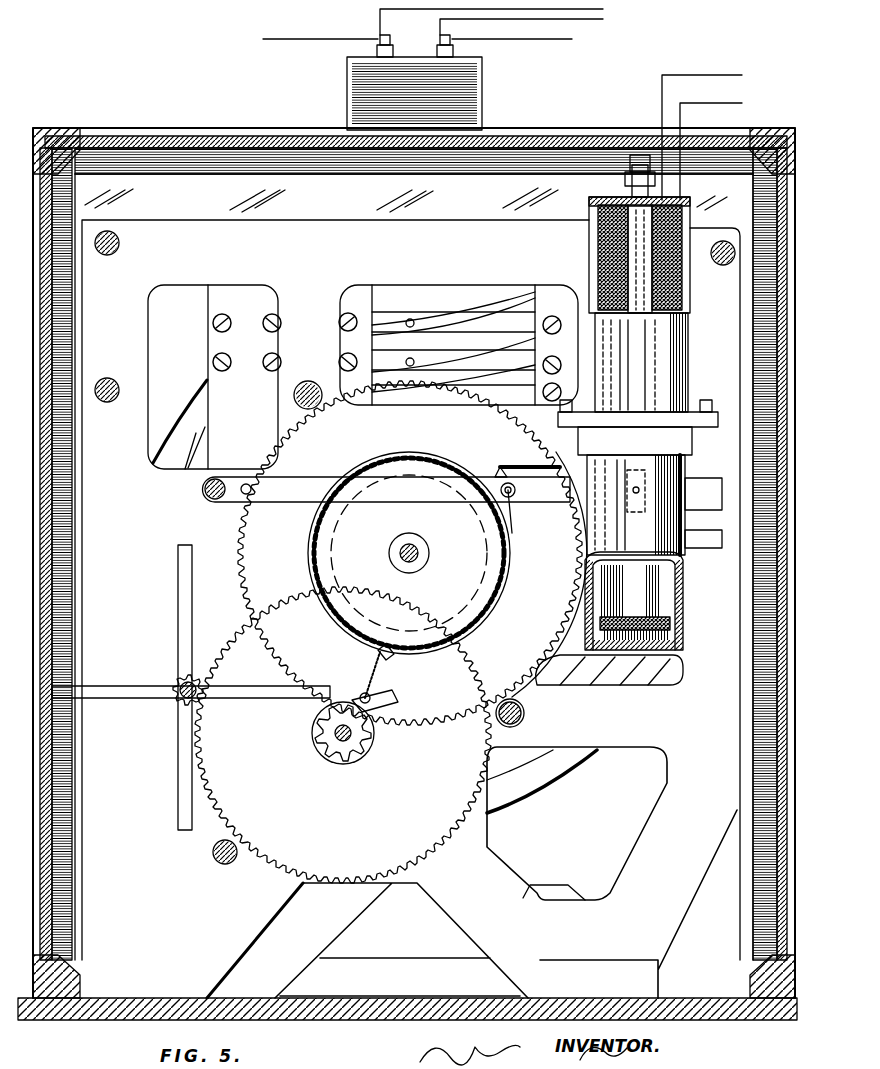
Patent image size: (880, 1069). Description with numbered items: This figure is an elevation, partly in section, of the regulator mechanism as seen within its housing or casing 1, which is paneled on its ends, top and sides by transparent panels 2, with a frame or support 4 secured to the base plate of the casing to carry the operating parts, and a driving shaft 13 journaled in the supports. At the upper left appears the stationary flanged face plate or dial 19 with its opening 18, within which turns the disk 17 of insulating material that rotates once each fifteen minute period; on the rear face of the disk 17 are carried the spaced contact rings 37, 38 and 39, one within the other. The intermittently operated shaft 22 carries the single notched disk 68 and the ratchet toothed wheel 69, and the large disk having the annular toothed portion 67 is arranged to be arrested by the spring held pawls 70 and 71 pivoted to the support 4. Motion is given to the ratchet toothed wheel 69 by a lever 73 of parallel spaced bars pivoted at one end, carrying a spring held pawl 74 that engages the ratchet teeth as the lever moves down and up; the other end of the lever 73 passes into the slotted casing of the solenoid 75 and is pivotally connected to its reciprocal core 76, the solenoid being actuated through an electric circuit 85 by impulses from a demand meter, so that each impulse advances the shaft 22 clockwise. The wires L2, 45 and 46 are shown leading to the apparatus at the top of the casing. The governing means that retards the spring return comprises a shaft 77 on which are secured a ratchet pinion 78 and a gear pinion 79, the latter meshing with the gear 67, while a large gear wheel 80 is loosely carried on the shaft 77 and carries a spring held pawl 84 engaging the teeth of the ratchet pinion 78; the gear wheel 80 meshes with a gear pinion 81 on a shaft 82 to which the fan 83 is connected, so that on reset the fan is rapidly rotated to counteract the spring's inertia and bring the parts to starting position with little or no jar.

The housing or casing 1 is at (378, 1018).
The transparent panels 2 is at (188, 140).
The frame or support 4 is at (415, 890).
The driving shaft 13 is at (220, 864).
The disk 17 is at (186, 400).
The opening 18 is at (172, 430).
The flanged face plate or dial 19 is at (214, 377).
The intermittently operated shaft 22 is at (400, 553).
The contact ring 37 is at (418, 376).
The contact ring 38 is at (461, 372).
The contact ring 39 is at (500, 330).
The lead wire 45 is at (588, 12).
The lead wire 46 is at (531, 20).
The annular toothed portion 67 is at (497, 408).
The single notched disk 68 is at (468, 605).
The ratchet toothed wheel 69 is at (312, 540).
The spring held pawl 70 is at (496, 718).
The spring held pawl 71 is at (322, 382).
The lever 73 is at (702, 488).
The pawl 74 is at (508, 515).
The solenoid 75 is at (683, 372).
The reciprocal core 76 is at (660, 585).
The shaft 77 is at (333, 735).
The ratchet pinion 78 is at (330, 752).
The gear pinion 79 is at (335, 763).
The large gear wheel 80 is at (445, 832).
The gear pinion 81 is at (182, 700).
The shaft 82 is at (178, 682).
The fan 83 is at (110, 697).
The spring held pawl 84 is at (362, 696).
The electric circuit 85 is at (712, 84).
The line L2 is at (402, 38).